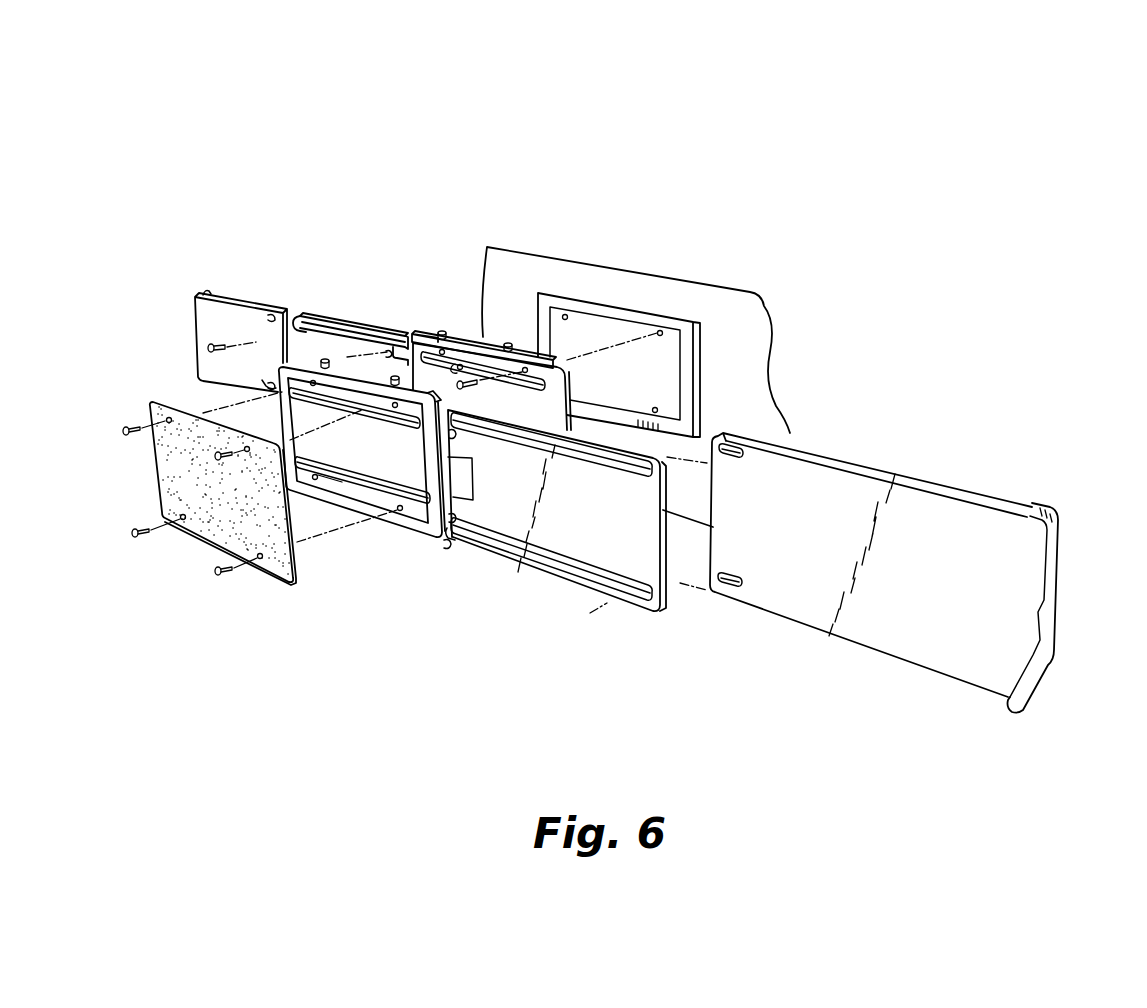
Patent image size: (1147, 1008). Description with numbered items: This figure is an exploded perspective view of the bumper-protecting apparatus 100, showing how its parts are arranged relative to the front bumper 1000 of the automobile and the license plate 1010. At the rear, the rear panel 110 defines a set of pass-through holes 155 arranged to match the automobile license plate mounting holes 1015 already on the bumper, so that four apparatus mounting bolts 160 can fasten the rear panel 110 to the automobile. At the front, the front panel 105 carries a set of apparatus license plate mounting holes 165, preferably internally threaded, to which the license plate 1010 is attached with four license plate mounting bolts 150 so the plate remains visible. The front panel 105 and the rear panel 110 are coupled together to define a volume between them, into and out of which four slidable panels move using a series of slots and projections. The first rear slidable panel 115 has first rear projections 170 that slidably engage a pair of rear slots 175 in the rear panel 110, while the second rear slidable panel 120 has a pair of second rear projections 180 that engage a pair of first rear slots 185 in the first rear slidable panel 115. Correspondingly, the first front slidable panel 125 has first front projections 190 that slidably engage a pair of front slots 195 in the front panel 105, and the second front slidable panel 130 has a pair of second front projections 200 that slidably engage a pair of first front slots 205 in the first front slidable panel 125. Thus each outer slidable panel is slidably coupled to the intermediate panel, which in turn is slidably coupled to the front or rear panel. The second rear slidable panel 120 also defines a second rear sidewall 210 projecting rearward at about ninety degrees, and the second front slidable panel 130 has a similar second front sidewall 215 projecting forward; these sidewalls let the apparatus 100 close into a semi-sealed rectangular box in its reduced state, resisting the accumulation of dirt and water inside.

The apparatus 100 is at (195, 148).
The front panel 105 is at (408, 513).
The rear panel 110 is at (422, 333).
The first rear slidable panel 115 is at (337, 347).
The second rear slidable panel 120 is at (203, 325).
The first front slidable panel 125 is at (553, 518).
The second front slidable panel 130 is at (855, 522).
The license plate mounting bolts 150 is at (120, 432).
The pass-through holes 155 is at (525, 370).
The apparatus mounting bolts 160 is at (473, 387).
The apparatus license plate mounting holes 165 is at (395, 408).
The first rear projections 170 is at (392, 357).
The rear slots 175 is at (452, 368).
The second rear projections 180 is at (260, 380).
The first rear slots 185 is at (300, 320).
The first front projections 190 is at (452, 520).
The front slots 195 is at (343, 480).
The second front projections 200 is at (730, 587).
The first front slots 205 is at (585, 575).
The second rear sidewall 210 is at (206, 296).
The second front sidewall 215 is at (1057, 547).
The front bumper 1000 is at (752, 343).
The license plate 1010 is at (203, 523).
The automobile license plate mounting holes 1015 is at (660, 333).